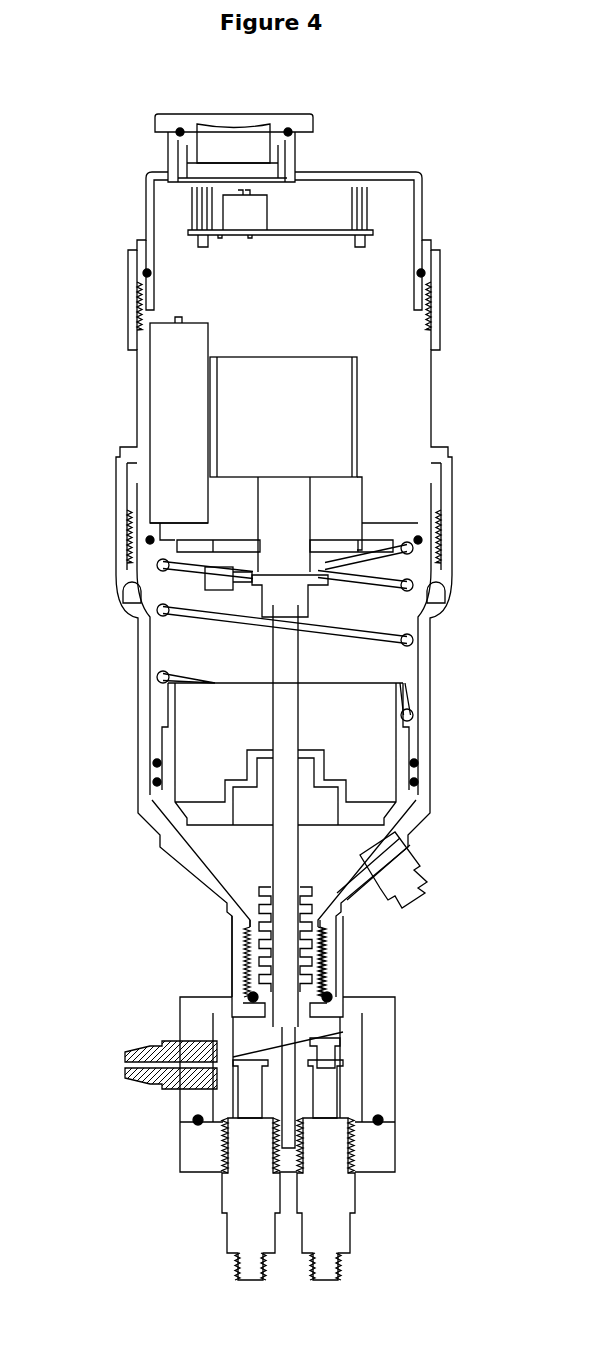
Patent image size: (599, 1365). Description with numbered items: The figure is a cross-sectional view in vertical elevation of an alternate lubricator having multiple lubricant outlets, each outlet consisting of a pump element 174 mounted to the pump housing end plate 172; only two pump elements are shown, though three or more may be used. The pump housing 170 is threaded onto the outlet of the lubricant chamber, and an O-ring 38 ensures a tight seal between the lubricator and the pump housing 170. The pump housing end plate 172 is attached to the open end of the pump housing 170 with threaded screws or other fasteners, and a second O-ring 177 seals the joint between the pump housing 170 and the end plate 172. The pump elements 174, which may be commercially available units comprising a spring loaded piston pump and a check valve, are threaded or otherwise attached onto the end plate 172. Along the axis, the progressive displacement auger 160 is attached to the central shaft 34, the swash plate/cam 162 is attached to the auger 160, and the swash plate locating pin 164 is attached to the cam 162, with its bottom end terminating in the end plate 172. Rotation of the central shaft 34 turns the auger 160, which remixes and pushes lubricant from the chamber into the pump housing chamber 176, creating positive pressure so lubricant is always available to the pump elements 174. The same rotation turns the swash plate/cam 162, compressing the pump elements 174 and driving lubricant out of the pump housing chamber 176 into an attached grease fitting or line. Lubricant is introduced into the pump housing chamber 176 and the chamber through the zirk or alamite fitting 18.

The central shaft 34 is at (273, 845).
The progressive displacement auger 160 is at (280, 943).
The O-ring 38 is at (327, 997).
The swash plate/cam 162 is at (260, 1035).
The pump housing 170 is at (390, 1023).
The zirk or alamite fitting 18 is at (125, 1057).
The swash plate locating pin 164 is at (288, 1082).
The pump housing chamber 176 is at (222, 1103).
The O-ring 177 is at (197, 1123).
The pump housing end plate 172 is at (390, 1142).
The pump element 174 is at (233, 1190).